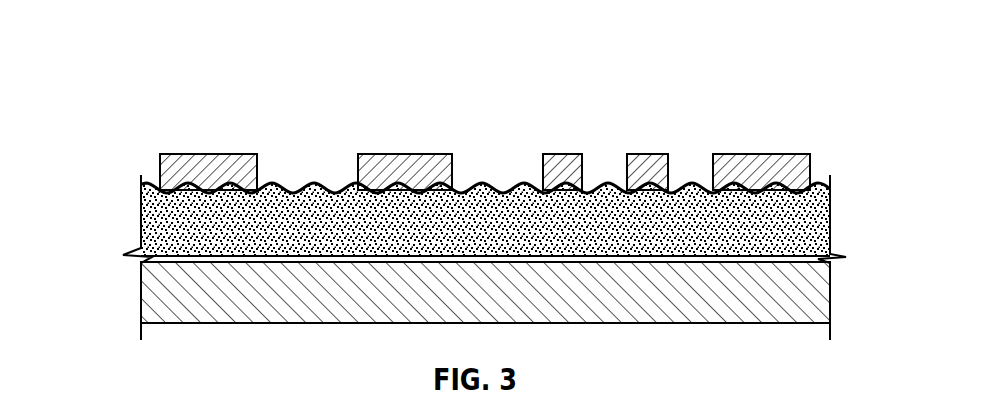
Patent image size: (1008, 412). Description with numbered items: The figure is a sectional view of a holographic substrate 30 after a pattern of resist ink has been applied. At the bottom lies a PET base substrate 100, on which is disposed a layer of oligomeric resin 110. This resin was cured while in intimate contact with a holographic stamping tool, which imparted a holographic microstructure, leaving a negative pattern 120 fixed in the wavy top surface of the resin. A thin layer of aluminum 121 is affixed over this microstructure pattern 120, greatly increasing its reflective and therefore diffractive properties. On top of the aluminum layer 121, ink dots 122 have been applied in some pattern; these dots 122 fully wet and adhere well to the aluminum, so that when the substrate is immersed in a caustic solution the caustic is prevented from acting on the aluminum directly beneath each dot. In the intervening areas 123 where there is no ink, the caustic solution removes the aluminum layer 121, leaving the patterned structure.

The holographic substrate 30 is at (70, 187).
The PET base substrate 100 is at (150, 293).
The layer of oligomeric resin 110 is at (150, 222).
The negative pattern 120 is at (822, 205).
The thin layer of aluminum 121 is at (147, 168).
The ink dots 122 is at (208, 155).
The areas where there is no ink 123 is at (310, 168).